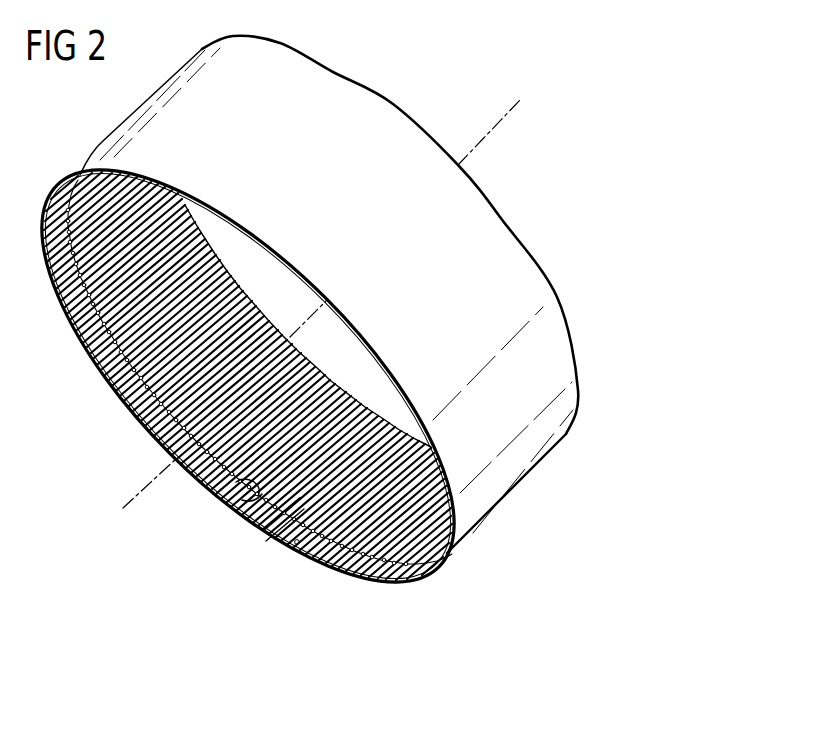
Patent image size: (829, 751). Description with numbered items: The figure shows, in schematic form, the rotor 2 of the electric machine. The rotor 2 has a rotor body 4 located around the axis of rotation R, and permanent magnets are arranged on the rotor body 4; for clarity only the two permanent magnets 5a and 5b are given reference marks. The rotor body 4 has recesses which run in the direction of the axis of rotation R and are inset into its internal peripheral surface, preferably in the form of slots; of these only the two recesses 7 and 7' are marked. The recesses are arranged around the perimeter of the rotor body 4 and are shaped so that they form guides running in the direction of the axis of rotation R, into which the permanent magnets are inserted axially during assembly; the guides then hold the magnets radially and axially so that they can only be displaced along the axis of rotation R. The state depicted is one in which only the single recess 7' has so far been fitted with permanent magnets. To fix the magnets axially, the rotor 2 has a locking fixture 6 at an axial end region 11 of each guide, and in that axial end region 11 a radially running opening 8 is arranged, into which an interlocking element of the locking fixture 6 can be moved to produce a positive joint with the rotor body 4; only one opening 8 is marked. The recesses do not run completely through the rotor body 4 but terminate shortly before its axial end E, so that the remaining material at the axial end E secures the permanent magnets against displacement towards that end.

The rotor 2 is at (392, 103).
The rotor body 4 is at (345, 88).
The permanent magnet 5a is at (281, 536).
The permanent magnet 5b is at (297, 545).
The locking fixture 6 is at (264, 529).
The recess 7 is at (248, 385).
The recess 7' is at (257, 543).
The opening 8 is at (241, 508).
The axial end region 11 is at (232, 485).
The axial end E is at (372, 403).
The axis of rotation R is at (507, 108).